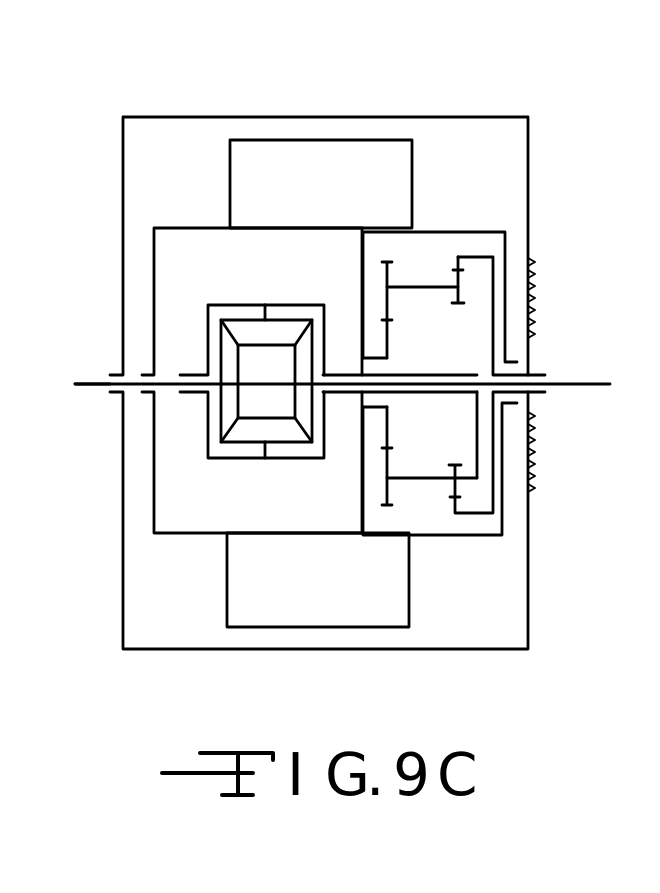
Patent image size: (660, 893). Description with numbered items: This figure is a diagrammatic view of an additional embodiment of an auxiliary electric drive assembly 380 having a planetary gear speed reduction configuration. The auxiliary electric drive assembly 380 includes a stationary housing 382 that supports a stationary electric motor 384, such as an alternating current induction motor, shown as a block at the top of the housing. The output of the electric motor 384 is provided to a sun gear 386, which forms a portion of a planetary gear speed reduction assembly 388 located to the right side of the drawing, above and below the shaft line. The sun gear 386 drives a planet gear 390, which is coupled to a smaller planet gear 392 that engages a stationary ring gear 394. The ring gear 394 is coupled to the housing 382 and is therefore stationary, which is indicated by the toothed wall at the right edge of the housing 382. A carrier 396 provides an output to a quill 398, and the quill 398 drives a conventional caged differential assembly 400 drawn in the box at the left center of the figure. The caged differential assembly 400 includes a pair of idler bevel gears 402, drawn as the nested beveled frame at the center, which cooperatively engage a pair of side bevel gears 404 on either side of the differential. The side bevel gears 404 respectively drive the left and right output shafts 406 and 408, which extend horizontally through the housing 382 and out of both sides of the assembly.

The auxiliary electric drive assembly 380 is at (399, 73).
The stationary housing 382 is at (528, 240).
The electric motor 384 is at (412, 193).
The sun gear 386 is at (388, 338).
The planetary gear speed reduction assembly 388 is at (466, 579).
The planet gear 390 is at (388, 300).
The smaller planet gear 392 is at (453, 272).
The stationary ring gear 394 is at (457, 256).
The carrier 396 is at (396, 287).
The quill 398 is at (400, 393).
The caged differential assembly 400 is at (243, 285).
The idler bevel gears 402 is at (277, 333).
The side bevel gears 404 is at (305, 406).
The left output shaft 406 is at (97, 385).
The right output shaft 408 is at (585, 386).